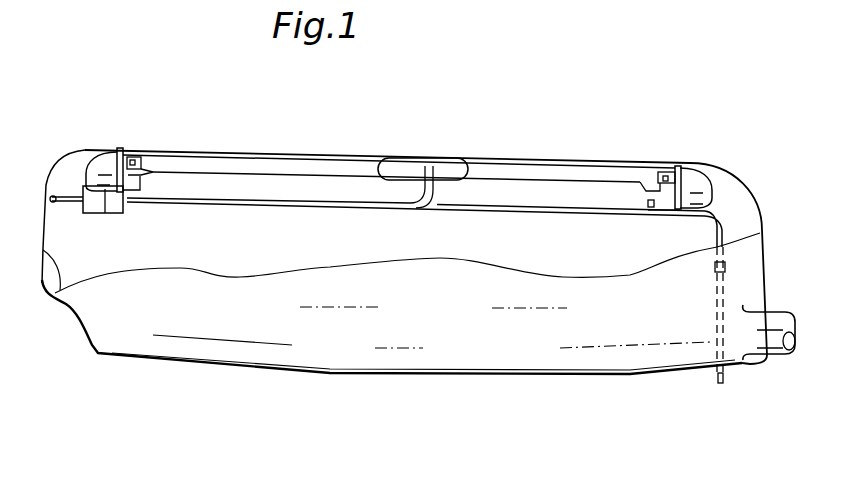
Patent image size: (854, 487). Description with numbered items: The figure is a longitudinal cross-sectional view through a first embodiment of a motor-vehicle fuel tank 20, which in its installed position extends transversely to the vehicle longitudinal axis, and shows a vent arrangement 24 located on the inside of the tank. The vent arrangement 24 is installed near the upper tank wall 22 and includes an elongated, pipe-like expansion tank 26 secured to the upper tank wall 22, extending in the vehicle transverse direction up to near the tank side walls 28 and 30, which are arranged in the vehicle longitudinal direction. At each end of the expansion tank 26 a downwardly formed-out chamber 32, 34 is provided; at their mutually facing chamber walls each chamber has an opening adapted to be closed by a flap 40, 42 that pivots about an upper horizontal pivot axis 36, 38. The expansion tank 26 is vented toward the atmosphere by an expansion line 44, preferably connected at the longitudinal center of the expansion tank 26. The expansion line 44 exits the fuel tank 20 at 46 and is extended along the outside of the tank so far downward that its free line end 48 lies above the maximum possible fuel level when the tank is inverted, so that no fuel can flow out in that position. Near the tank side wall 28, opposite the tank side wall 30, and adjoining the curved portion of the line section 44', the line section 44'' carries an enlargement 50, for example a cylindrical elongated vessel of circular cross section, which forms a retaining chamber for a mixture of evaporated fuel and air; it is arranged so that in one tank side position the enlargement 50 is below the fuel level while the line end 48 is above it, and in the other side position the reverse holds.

The fuel tank 20 is at (729, 163).
The upper tank wall 22 is at (493, 156).
The vent arrangement 24 is at (91, 143).
The expansion tank 26 is at (272, 181).
The tank side wall 28 is at (60, 288).
The tank side wall 30 is at (770, 268).
The chamber 32 is at (127, 149).
The chamber 34 is at (677, 165).
The pivot axis 36 is at (152, 170).
The pivot axis 38 is at (654, 184).
The flap 40 is at (148, 180).
The flap 42 is at (648, 206).
The expansion line 44 is at (377, 251).
The line section 44' is at (213, 258).
The line section 44'' is at (599, 234).
The exit point of expansion line 46 is at (714, 273).
The free line end 48 is at (724, 383).
The enlargement 50 is at (107, 222).